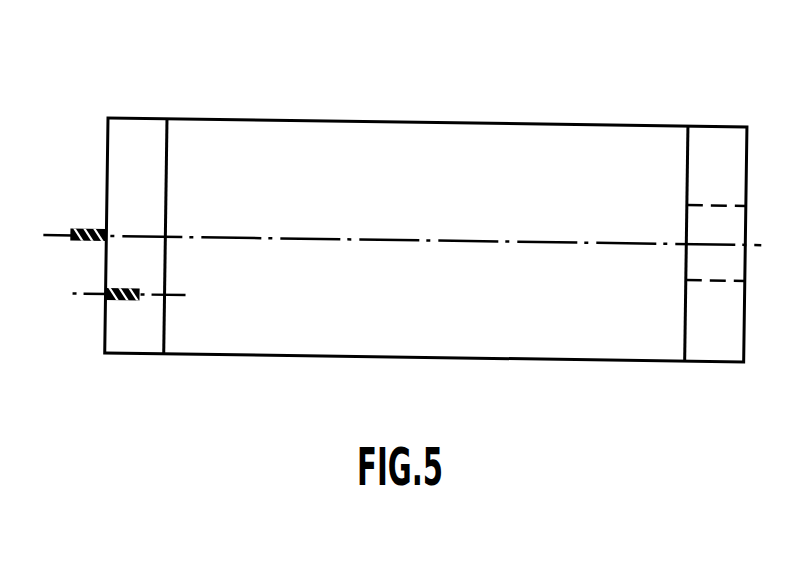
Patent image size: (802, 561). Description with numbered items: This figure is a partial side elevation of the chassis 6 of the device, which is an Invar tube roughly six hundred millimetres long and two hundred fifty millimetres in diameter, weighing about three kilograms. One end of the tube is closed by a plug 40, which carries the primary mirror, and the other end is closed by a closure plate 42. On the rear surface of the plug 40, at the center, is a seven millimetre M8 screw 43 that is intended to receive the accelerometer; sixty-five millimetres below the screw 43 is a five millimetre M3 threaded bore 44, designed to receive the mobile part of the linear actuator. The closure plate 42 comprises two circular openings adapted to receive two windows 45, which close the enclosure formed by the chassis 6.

The chassis 6 is at (518, 118).
The plug 40 is at (144, 118).
The closure plate 42 is at (716, 118).
The screw 43 is at (81, 229).
The threaded bore 44 is at (107, 294).
The windows 45 is at (747, 255).